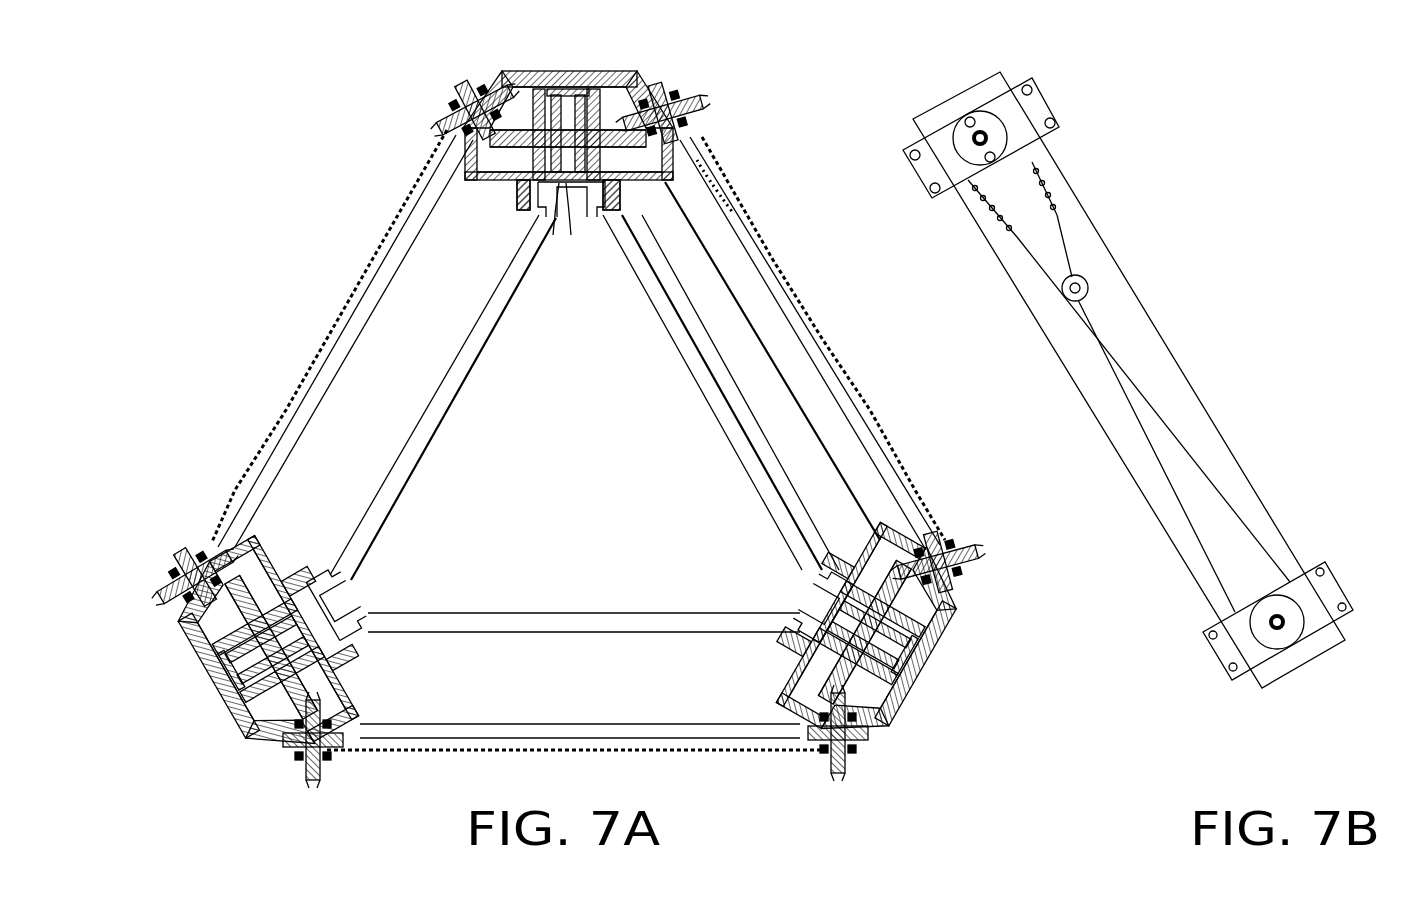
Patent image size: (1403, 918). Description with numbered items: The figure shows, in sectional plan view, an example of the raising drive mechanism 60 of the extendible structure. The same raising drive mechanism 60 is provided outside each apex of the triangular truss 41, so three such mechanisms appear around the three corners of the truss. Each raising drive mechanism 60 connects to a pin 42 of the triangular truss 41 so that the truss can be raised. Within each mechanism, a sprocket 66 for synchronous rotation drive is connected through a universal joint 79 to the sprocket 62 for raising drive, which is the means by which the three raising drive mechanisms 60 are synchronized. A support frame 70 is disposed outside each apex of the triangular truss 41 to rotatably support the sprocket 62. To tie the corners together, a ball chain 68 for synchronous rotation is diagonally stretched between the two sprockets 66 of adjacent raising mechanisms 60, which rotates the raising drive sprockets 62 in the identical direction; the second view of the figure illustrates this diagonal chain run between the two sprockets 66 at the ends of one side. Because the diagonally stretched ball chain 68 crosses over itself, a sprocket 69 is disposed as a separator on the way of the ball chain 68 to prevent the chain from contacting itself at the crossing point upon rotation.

In FIG. 7A, the triangular truss 41 is at (455, 380).
In FIG. 7A, the pin 42 is at (577, 212).
In FIG. 7A, the raising drive mechanism 60 is at (583, 68).
In FIG. 7A, the sprocket for raising drive 62 is at (553, 240).
In FIG. 7A, the sprocket for synchronous rotation drive 66 is at (445, 105).
In FIG. 7A, the ball chain 68 is at (712, 180).
In FIG. 7B, the ball chain 68 is at (1062, 240).
In FIG. 7B, the sprocket 69 is at (1088, 290).
In FIG. 7A, the support frame 70 is at (665, 188).
In FIG. 7A, the universal joint 79 is at (515, 185).